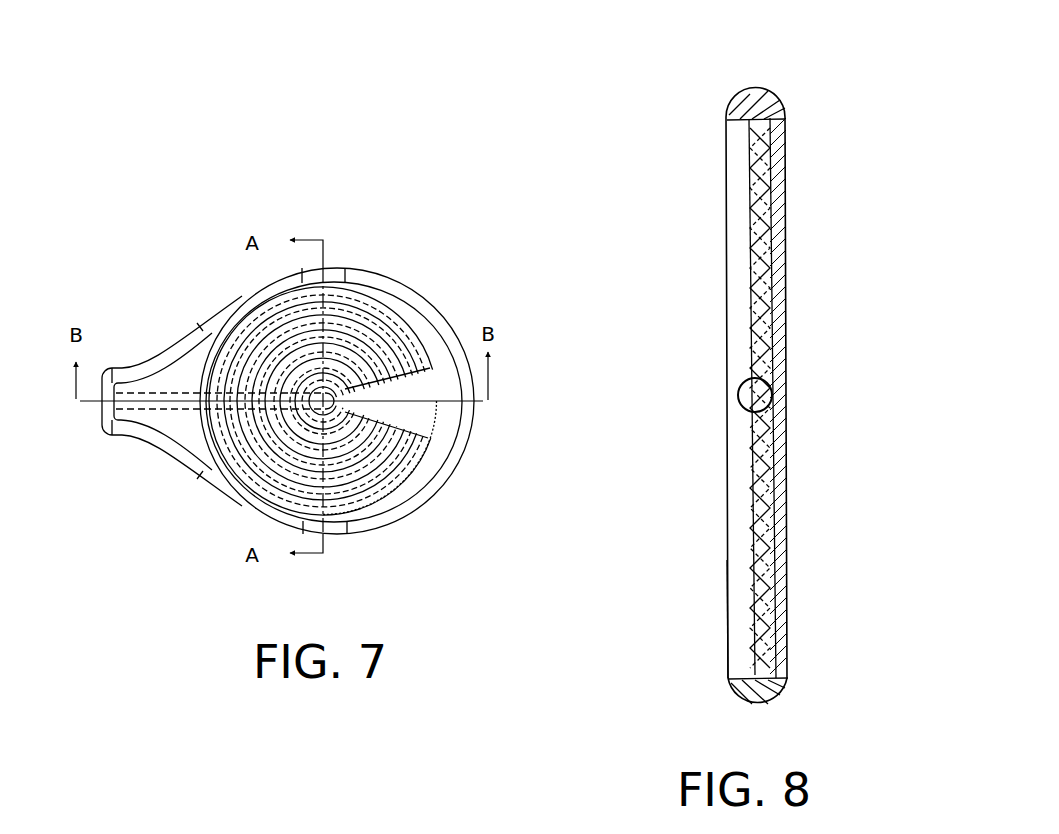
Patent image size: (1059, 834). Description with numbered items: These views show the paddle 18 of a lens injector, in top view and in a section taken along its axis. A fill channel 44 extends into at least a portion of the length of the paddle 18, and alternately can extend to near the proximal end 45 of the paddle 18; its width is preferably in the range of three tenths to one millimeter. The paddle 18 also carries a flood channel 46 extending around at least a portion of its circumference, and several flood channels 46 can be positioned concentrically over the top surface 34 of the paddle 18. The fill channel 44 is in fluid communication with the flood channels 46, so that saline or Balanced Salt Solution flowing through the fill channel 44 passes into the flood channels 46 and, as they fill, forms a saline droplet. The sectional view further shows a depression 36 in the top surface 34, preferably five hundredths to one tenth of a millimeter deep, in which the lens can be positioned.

In FIG. 7, the paddle 18 is at (414, 488).
In FIG. 7, the top surface 34 is at (183, 432).
In FIG. 8, the top surface 34 is at (703, 98).
In FIG. 7, the depression 36 is at (455, 427).
In FIG. 8, the depression 36 is at (728, 620).
In FIG. 7, the fill channel 44 is at (168, 398).
In FIG. 8, the fill channel 44 is at (750, 397).
In FIG. 7, the proximal end 45 is at (472, 428).
In FIG. 7, the flood channel 46 is at (247, 323).
In FIG. 8, the flood channel 46 is at (745, 165).